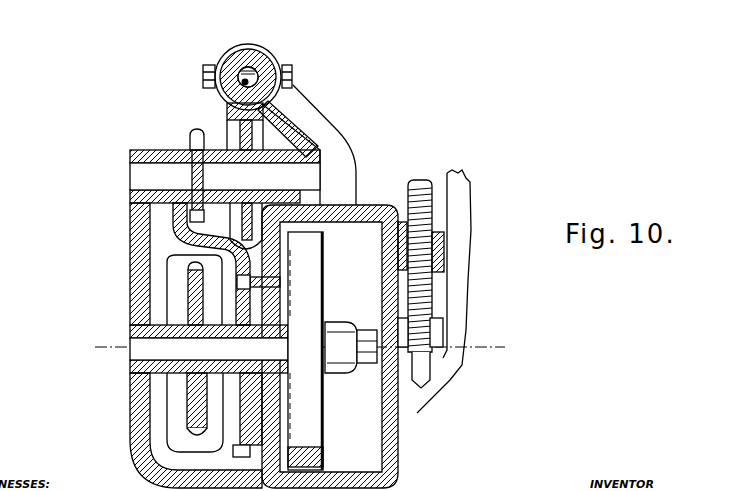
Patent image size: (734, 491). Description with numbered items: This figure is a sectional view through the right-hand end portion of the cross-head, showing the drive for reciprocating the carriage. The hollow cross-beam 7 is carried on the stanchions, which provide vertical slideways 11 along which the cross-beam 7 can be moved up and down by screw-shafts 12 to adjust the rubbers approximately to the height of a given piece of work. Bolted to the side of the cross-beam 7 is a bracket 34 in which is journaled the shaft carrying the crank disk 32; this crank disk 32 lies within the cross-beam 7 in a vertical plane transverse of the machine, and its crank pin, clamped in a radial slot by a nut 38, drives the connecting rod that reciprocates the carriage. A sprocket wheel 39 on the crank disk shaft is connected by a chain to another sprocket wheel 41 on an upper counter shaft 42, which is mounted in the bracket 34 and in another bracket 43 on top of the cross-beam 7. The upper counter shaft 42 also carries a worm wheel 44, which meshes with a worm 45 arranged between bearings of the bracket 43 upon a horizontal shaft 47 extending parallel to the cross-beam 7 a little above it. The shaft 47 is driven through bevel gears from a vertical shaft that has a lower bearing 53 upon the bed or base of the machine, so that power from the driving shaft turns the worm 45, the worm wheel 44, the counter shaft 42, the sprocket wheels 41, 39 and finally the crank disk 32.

The cross-beam 7 is at (400, 462).
The vertical slideways 11 is at (452, 192).
The screw-shafts 12 is at (420, 183).
The crank disk 32 is at (323, 262).
The bracket 34 is at (132, 288).
The nut 38 is at (352, 325).
The sprocket wheel 39 is at (185, 413).
The sprocket wheel 41 is at (190, 132).
The upper counter shaft 42 is at (137, 172).
The bracket 43 is at (347, 153).
The worm wheel 44 is at (232, 128).
The worm 45 is at (262, 50).
The shaft 47 is at (251, 84).
The lower bearing 53 is at (131, 355).